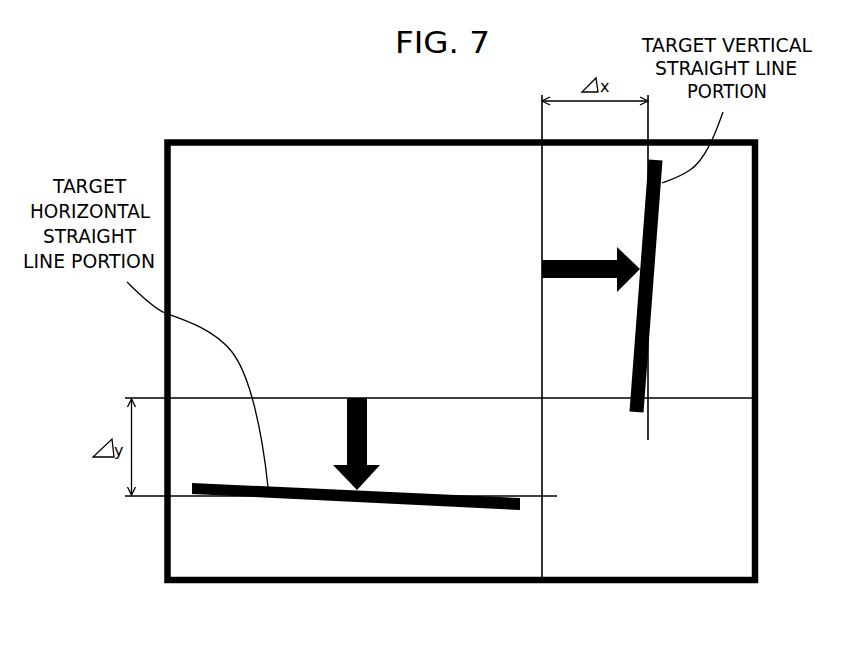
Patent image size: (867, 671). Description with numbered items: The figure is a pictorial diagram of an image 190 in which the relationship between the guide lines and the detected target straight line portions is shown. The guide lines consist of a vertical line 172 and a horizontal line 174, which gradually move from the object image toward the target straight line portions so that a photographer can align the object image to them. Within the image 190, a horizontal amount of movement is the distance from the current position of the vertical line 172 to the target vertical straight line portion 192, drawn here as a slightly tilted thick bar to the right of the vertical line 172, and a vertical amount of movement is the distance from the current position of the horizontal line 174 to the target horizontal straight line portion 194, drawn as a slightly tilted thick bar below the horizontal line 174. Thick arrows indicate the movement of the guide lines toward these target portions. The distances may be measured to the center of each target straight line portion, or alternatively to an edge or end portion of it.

The image 190 is at (322, 139).
The vertical line 172 is at (541, 180).
The horizontal line 174 is at (205, 398).
The target vertical straight line portion 192 is at (655, 255).
The target horizontal straight line portion 194 is at (455, 505).